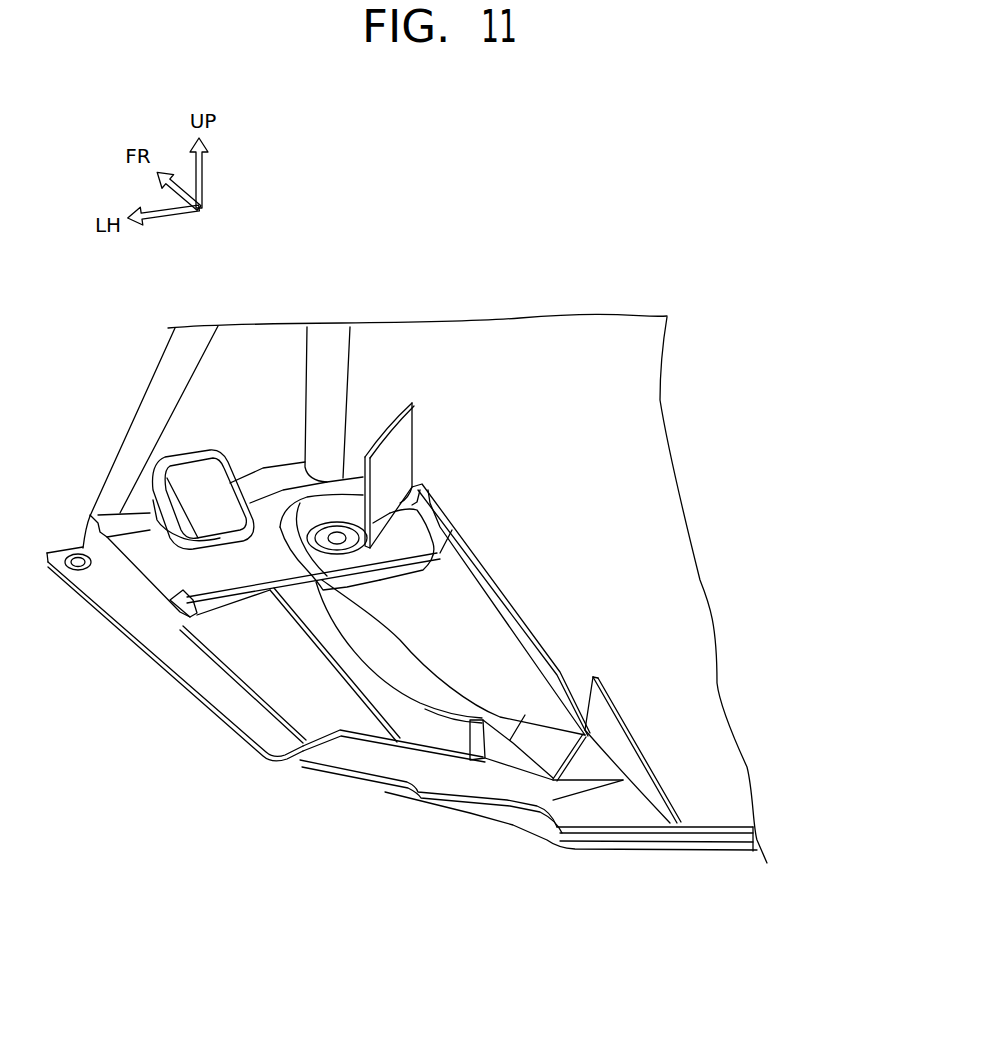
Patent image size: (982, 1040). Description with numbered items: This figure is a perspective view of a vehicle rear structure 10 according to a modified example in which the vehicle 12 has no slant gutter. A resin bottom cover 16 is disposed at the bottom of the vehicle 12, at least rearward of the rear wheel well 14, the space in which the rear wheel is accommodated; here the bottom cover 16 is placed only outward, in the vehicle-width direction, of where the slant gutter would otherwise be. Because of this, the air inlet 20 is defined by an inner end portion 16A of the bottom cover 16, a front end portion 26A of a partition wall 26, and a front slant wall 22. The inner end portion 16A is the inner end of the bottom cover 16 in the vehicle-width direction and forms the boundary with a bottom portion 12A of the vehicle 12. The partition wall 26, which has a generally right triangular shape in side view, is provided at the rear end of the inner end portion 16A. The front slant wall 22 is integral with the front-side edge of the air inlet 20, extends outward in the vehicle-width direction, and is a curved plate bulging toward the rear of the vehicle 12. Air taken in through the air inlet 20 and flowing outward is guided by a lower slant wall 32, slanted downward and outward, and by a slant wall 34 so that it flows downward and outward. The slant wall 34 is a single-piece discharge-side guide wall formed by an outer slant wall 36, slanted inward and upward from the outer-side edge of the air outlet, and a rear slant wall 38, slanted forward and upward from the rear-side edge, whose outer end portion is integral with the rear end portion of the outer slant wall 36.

The vehicle rear structure 10 is at (418, 822).
The vehicle 12 is at (730, 858).
The bottom portion 12A is at (683, 710).
The rear wheel well 14 is at (142, 423).
The bottom cover 16 is at (140, 620).
The inner end portion 16A is at (540, 634).
The air inlet 20 is at (510, 589).
The front slant wall 22 is at (390, 467).
The partition wall 26 is at (630, 770).
The front end portion 26A is at (589, 674).
The lower slant wall 32 is at (343, 632).
The slant wall 34 is at (354, 718).
The outer slant wall 36 is at (257, 663).
The rear slant wall 38 is at (513, 773).